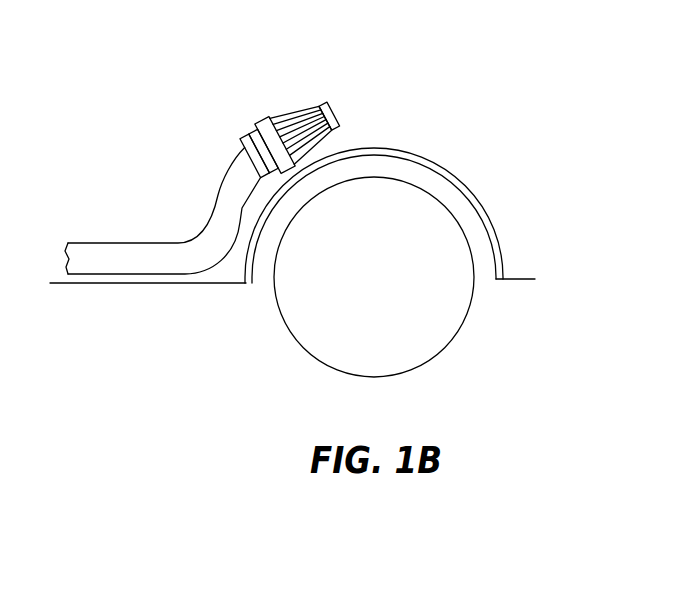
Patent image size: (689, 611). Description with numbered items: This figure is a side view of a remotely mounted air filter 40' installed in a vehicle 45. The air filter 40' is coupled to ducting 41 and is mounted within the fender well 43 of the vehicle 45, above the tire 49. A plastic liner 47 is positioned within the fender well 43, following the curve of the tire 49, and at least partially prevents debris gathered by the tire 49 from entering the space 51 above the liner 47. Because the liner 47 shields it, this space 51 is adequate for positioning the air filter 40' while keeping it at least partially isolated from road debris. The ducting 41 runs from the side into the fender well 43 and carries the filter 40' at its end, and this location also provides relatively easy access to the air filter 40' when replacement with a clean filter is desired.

The air filter 40' is at (291, 105).
The ducting 41 is at (213, 205).
The fender well 43 is at (374, 149).
The vehicle 45 is at (537, 176).
The plastic liner 47 is at (418, 152).
The tire 49 is at (277, 296).
The space 51 is at (382, 118).